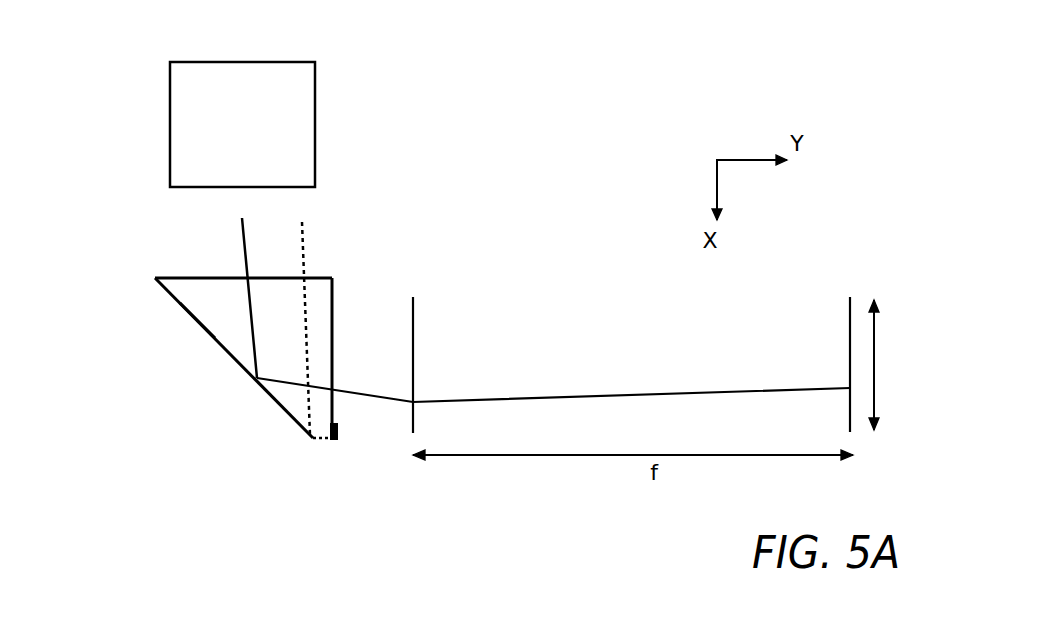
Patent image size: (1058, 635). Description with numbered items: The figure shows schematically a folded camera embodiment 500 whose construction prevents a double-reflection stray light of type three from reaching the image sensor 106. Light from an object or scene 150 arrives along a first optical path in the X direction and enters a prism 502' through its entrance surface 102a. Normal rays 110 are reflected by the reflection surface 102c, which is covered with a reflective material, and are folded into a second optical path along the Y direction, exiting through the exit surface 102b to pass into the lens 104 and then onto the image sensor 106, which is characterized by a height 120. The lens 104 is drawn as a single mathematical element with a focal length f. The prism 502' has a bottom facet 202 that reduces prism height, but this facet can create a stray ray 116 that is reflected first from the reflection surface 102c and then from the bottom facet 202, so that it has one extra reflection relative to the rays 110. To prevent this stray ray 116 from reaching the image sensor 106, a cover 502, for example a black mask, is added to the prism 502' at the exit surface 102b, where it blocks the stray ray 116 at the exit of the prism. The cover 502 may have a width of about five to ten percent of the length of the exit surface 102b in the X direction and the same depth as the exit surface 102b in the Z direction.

The folded camera embodiment 500 is at (625, 54).
The object or scene 150 is at (222, 170).
The rays 110 is at (242, 232).
The stray ray 116 is at (305, 238).
The entrance surface 102a is at (157, 278).
The exit surface 102b is at (333, 297).
The reflection surface 102c is at (283, 412).
The prism 502' is at (138, 320).
The bottom facet 202 is at (325, 442).
The cover 502 is at (378, 468).
The lens 104 is at (413, 330).
The image sensor 106 is at (851, 297).
The height 120 is at (875, 350).